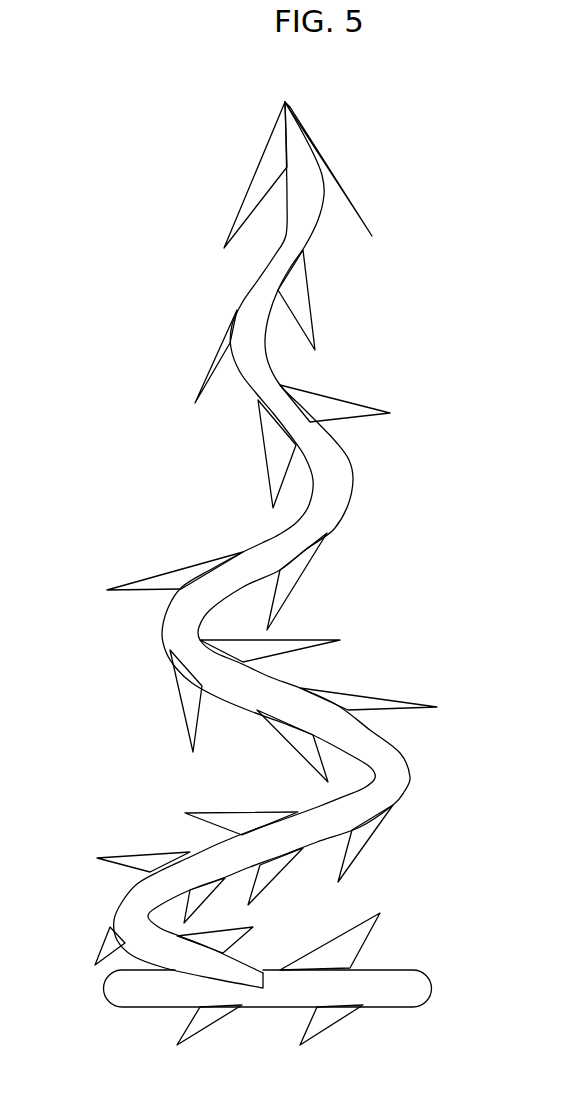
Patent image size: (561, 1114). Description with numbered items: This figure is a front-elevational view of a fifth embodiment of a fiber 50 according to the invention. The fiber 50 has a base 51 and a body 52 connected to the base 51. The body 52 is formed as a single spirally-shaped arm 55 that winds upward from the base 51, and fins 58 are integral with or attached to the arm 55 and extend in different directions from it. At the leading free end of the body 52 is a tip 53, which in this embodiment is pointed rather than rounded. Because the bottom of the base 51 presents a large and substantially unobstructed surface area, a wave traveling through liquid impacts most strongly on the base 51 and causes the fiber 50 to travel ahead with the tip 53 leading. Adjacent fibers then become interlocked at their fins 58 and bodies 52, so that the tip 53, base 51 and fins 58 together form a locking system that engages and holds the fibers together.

The fiber 50 is at (157, 322).
The base 51 is at (122, 997).
The body 52 is at (263, 528).
The tip 53 is at (287, 100).
The spirally-shaped arm 55 is at (133, 900).
The fin 58 is at (186, 692).